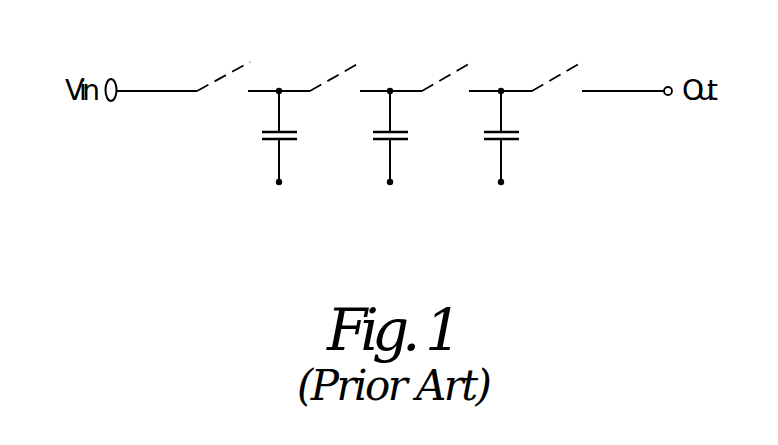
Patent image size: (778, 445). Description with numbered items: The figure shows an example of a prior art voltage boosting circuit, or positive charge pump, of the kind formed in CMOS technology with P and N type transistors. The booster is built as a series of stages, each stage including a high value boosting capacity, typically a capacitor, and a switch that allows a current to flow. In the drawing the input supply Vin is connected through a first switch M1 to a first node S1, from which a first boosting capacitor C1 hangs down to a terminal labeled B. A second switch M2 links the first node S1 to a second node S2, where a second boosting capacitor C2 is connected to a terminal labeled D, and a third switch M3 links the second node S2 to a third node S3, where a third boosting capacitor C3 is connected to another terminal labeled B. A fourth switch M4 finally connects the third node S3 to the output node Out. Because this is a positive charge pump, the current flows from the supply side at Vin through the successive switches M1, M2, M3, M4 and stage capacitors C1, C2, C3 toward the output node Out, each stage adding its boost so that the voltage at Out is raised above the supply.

The switch M1 is at (238, 63).
The switch M2 is at (350, 63).
The switch M3 is at (461, 63).
The switch M4 is at (557, 63).
The first node S1 is at (287, 75).
The second node S2 is at (399, 75).
The third node S3 is at (509, 75).
The boosting capacitor C1 is at (262, 136).
The boosting capacitor C2 is at (370, 136).
The boosting capacitor C3 is at (481, 136).
The supply input Vin is at (152, 90).
The output node Out is at (627, 91).
The terminal B is at (390, 201).
The terminal D is at (390, 201).